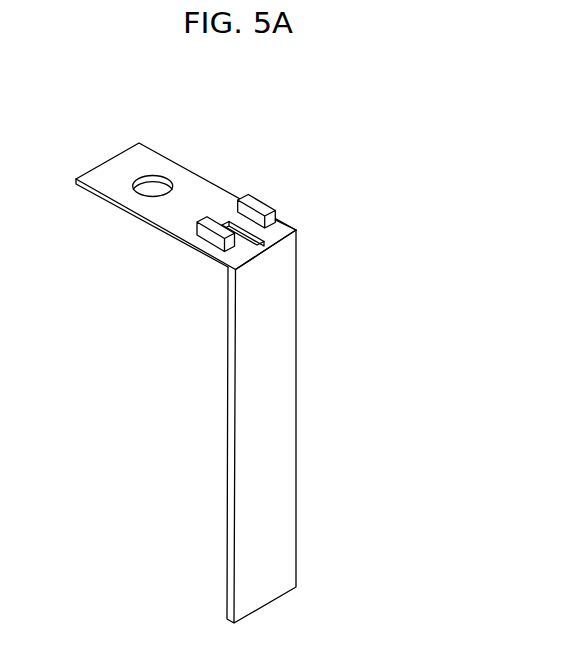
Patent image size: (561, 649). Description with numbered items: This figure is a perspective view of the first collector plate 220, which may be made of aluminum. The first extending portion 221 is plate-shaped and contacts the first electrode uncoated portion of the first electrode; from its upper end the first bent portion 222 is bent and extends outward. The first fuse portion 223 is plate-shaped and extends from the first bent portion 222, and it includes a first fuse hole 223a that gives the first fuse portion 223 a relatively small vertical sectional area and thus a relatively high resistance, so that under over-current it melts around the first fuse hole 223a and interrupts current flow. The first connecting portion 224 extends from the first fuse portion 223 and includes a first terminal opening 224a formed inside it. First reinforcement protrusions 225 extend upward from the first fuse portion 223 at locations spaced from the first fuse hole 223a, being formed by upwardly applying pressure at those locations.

The first collector plate 220 is at (244, 352).
The first extending portion 221 is at (292, 365).
The first bent portion 222 is at (268, 249).
The first fuse portion 223 is at (205, 247).
The first fuse hole 223a is at (279, 229).
The first connecting portion 224 is at (174, 176).
The first terminal opening 224a is at (156, 177).
The first reinforcement protrusion 225 is at (255, 215).